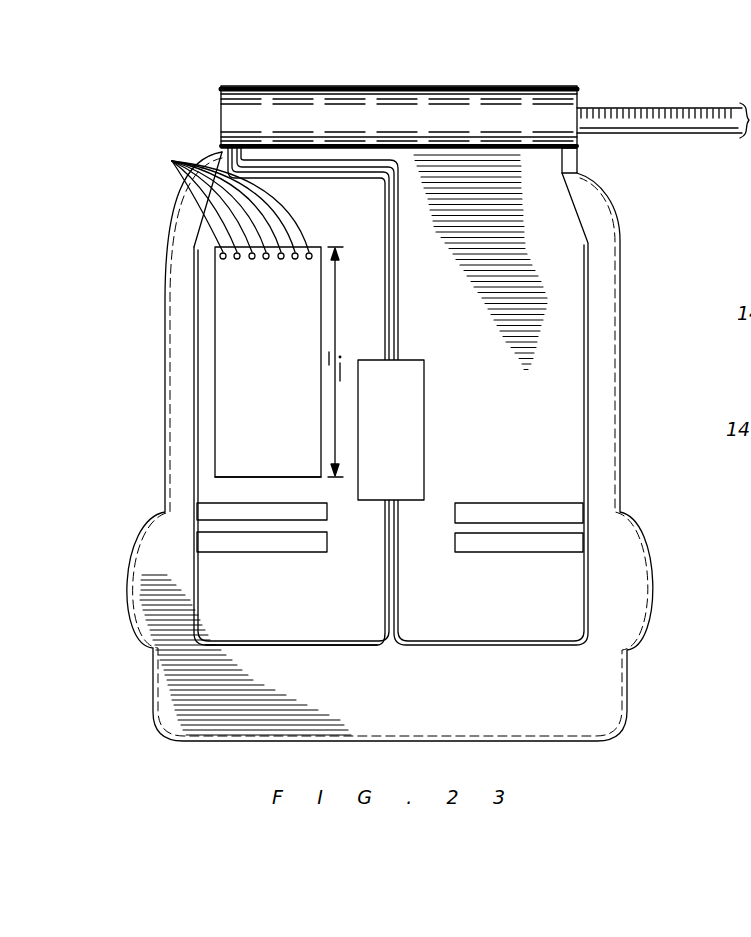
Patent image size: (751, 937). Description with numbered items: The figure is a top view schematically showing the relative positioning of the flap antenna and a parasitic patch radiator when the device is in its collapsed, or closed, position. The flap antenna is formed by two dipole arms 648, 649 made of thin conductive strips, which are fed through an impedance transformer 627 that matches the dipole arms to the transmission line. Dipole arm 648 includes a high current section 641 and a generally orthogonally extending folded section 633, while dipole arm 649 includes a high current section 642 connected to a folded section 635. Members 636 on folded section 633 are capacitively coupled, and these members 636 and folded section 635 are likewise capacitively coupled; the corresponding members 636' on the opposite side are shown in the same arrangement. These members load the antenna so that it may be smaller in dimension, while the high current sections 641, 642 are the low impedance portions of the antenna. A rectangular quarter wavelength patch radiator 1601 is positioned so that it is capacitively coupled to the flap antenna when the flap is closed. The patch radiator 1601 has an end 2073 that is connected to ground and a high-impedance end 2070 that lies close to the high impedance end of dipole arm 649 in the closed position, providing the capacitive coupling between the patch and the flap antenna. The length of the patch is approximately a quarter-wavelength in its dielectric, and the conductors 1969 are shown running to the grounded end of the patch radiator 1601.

The conductor wires 1969 is at (174, 162).
The end 2073 is at (217, 258).
The quarter wavelength patch radiator 1601 is at (243, 365).
The high-impedance end 2070 is at (262, 476).
The impedance transformer 627 is at (430, 412).
The members 636 is at (497, 538).
The contact plates 636' is at (282, 538).
The folded section 633 is at (587, 597).
The folded section 635 is at (198, 577).
The high current section 642 is at (242, 638).
The high current section 641 is at (448, 640).
The dipole arm 649 is at (277, 653).
The dipole arm 648 is at (582, 643).